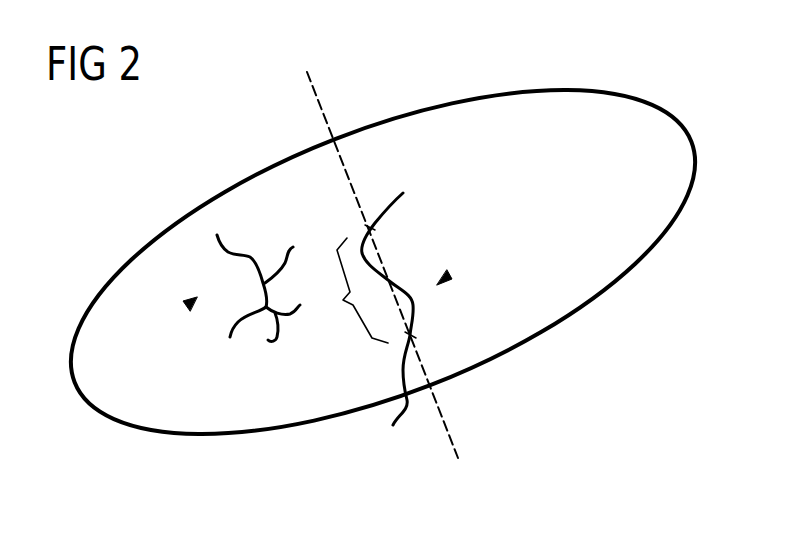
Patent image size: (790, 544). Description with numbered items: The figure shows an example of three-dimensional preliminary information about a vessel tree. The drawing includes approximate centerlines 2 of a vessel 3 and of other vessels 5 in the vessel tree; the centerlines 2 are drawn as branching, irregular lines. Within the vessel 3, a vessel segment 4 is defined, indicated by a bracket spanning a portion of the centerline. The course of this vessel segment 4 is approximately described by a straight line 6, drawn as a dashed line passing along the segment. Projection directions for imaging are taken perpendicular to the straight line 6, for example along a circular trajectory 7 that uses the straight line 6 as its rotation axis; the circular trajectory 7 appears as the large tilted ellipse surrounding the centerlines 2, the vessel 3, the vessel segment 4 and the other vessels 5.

The approximate centerlines 2 is at (227, 247).
The vessel 3 is at (447, 277).
The vessel segment 4 is at (354, 290).
The other vessels 5 is at (188, 304).
The straight line 6 is at (317, 98).
The circular trajectory 7 is at (590, 305).